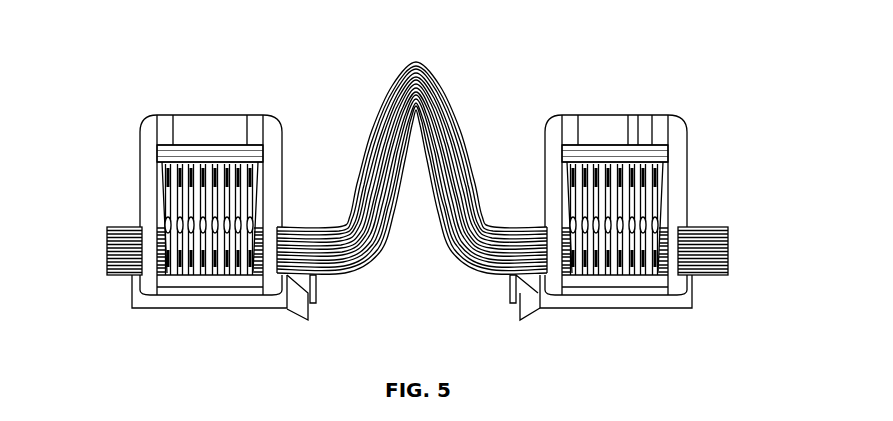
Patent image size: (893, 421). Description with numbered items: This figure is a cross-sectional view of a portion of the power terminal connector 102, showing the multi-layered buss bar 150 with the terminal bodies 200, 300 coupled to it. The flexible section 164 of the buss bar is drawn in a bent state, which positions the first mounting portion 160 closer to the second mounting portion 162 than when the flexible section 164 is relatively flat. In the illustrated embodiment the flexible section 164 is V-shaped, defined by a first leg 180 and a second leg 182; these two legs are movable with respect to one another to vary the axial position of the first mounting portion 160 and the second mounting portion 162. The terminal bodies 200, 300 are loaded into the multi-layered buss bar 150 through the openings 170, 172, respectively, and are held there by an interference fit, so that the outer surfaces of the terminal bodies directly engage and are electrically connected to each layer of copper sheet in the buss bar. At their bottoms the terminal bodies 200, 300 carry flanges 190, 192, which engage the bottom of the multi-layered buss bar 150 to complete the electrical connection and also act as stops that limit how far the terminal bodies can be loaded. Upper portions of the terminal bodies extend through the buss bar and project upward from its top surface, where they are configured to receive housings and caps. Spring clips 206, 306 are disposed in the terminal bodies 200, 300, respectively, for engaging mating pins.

The power terminal connector 102 is at (221, 55).
The multi-layered buss bar 150 is at (418, 77).
The first mounting portion 160 is at (100, 259).
The second mounting portion 162 is at (742, 260).
The flexible section 164 is at (452, 62).
The opening 170 is at (286, 232).
The opening 172 is at (544, 248).
The first leg 180 is at (379, 138).
The second leg 182 is at (457, 131).
The flange 190 is at (133, 292).
The flange 192 is at (508, 288).
The terminal body 200 is at (140, 176).
The spring clip 206 is at (216, 152).
The terminal body 300 is at (681, 153).
The spring clip 306 is at (599, 160).